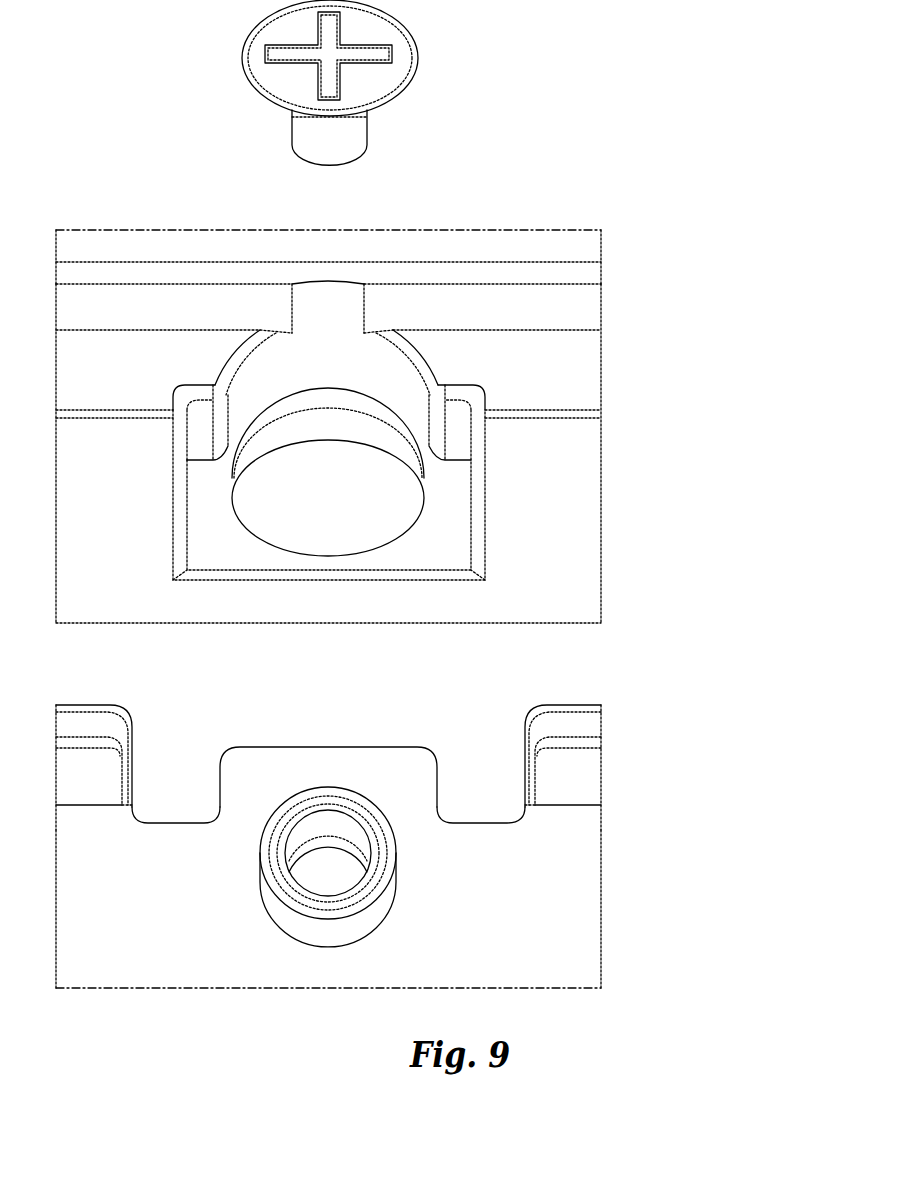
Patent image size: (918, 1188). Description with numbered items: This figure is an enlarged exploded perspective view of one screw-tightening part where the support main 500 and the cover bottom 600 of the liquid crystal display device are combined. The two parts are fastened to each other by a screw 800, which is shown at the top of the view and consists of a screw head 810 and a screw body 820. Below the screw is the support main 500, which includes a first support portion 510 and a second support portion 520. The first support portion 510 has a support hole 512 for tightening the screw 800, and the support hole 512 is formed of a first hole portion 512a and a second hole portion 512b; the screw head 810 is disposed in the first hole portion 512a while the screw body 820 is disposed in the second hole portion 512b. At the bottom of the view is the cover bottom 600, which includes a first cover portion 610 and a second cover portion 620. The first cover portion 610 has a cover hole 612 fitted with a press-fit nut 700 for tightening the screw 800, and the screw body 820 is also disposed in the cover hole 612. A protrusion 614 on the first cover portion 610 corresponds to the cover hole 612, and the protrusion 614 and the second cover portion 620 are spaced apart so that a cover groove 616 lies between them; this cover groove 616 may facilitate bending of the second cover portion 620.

The screw 800 is at (432, 82).
The screw head 810 is at (380, 78).
The screw body 820 is at (345, 140).
The support main 500 is at (459, 426).
The first support portion 510 is at (577, 375).
The second support portion 520 is at (577, 308).
The support hole 512 is at (518, 491).
The first hole portion 512a is at (452, 440).
The second hole portion 512b is at (378, 512).
The cover bottom 600 is at (444, 816).
The first cover portion 610 is at (563, 873).
The second cover portion 620 is at (575, 782).
The cover hole 612 is at (322, 875).
The protrusion 614 is at (368, 767).
The cover groove 616 is at (182, 808).
The press-fit nut 700 is at (385, 804).